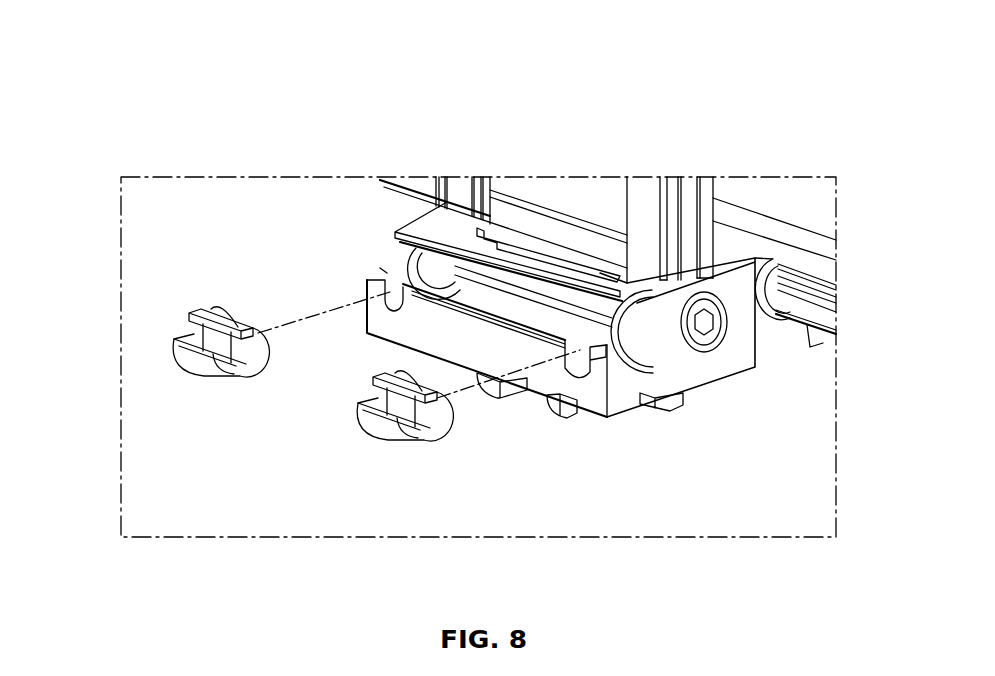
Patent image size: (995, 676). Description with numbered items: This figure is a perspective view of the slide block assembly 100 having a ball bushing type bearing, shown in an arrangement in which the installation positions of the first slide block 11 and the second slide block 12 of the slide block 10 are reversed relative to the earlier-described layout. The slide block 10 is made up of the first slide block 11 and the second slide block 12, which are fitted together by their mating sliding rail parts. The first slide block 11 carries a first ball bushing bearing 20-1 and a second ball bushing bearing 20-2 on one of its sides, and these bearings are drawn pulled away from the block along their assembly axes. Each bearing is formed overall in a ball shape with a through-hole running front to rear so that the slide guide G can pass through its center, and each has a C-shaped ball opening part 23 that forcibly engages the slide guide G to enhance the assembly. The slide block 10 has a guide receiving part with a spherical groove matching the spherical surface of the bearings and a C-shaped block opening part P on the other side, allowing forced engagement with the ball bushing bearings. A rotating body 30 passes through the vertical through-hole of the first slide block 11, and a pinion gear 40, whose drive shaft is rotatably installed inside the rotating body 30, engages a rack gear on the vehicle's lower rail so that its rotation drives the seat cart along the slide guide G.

The slide block assembly 100 is at (146, 86).
The slide block 10 is at (654, 363).
The first slide block 11 is at (678, 368).
The second slide block 12 is at (760, 362).
The first ball bushing bearing 20-1 is at (385, 427).
The second ball bushing bearing 20-2 is at (198, 362).
The ball opening part 23 is at (193, 332).
The rotating body 30 is at (572, 190).
The pinion gear 40 is at (538, 402).
The block opening part P is at (391, 246).
The slide guide G is at (815, 317).